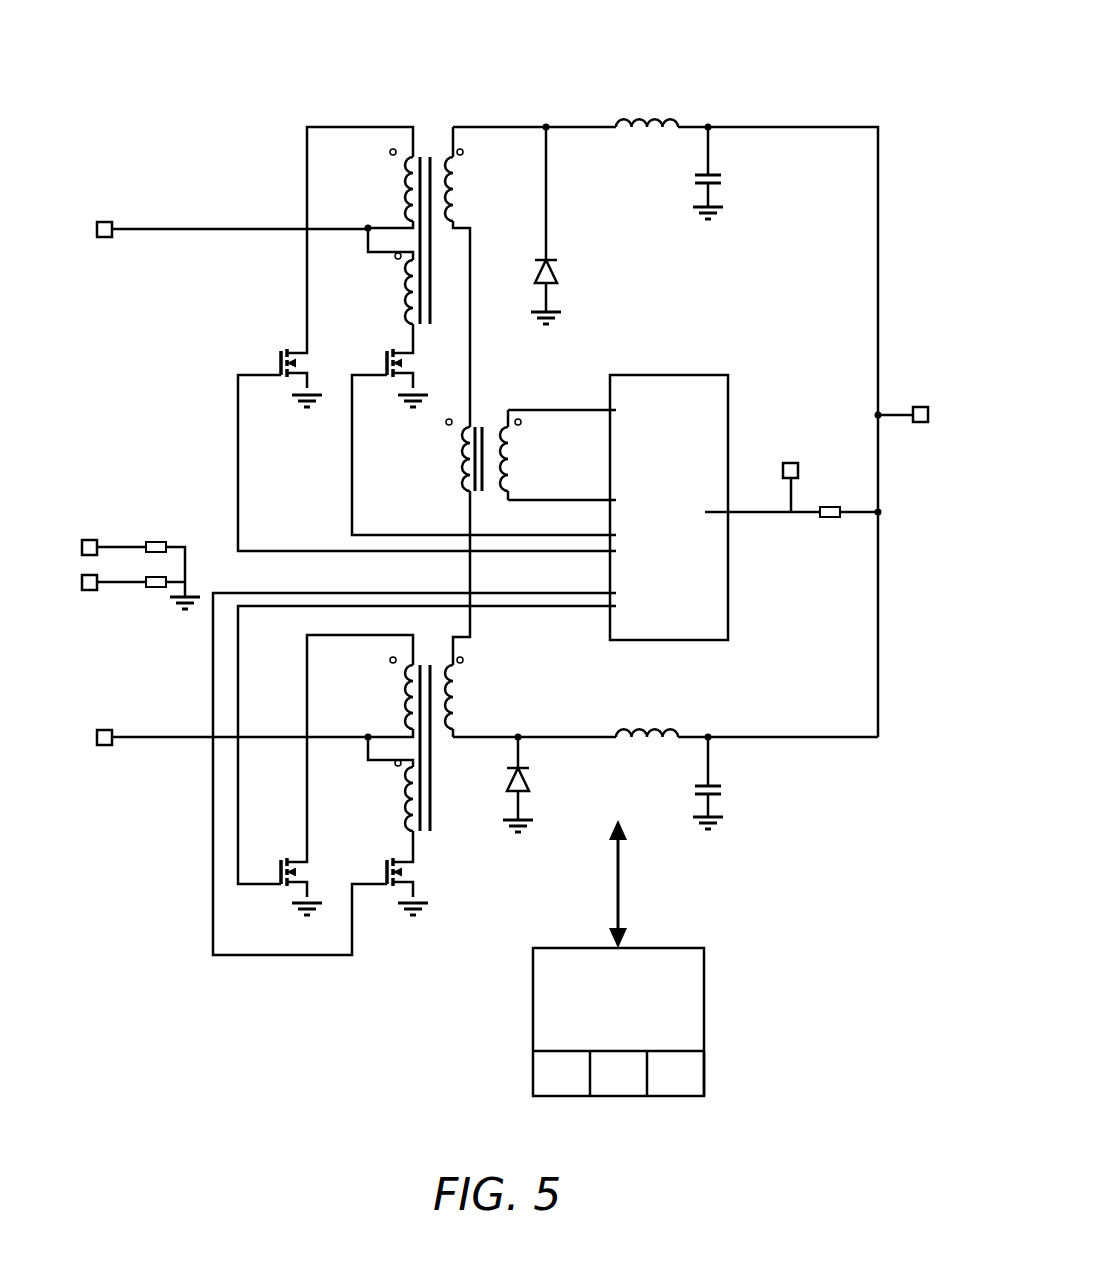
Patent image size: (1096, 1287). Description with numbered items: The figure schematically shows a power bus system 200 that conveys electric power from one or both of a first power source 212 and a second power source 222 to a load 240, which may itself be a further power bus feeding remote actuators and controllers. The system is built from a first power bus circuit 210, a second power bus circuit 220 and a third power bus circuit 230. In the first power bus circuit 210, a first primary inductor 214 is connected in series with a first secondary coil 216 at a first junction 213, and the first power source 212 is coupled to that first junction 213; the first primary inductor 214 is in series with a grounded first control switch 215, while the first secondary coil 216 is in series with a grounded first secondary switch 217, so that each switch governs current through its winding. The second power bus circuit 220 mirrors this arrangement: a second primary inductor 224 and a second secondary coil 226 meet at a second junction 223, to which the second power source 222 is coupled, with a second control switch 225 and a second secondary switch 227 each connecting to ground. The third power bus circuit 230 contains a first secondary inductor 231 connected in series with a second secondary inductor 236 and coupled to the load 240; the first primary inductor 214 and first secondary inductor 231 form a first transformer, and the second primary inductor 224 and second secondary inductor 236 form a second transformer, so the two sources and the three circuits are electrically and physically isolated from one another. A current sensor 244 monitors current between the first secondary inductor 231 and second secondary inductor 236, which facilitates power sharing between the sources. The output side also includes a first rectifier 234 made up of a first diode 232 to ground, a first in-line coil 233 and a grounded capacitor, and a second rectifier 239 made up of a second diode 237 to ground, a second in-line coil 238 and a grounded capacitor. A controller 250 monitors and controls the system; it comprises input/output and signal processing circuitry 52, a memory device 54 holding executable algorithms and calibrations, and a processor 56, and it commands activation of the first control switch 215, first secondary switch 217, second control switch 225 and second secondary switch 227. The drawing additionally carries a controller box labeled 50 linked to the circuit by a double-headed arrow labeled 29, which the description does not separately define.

The power bus system 200 is at (740, 75).
The first power bus circuit 210 is at (335, 324).
The first power source 212 is at (105, 222).
The first junction 213 is at (360, 232).
The first primary inductor 214 is at (404, 183).
The first control switch 215 is at (289, 352).
The first secondary coil 216 is at (404, 290).
The first secondary switch 217 is at (395, 362).
The second power bus circuit 220 is at (335, 774).
The second power source 222 is at (105, 730).
The second junction 223 is at (360, 735).
The second primary inductor 224 is at (404, 688).
The second control switch 225 is at (290, 884).
The second secondary coil 226 is at (404, 798).
The second secondary switch 227 is at (395, 870).
The communication link 29 is at (600, 853).
The third power bus circuit 230 is at (709, 426).
The first secondary inductor 231 is at (450, 196).
The first diode 232 is at (556, 282).
The first in-line coil 233 is at (655, 111).
The first rectifier 234 is at (762, 124).
The second secondary inductor 236 is at (450, 700).
The second diode 237 is at (523, 790).
The second in-line coil 238 is at (655, 721).
The second rectifier 239 is at (762, 734).
The load 240 is at (920, 405).
The current sensor 244 is at (456, 483).
The controller 250 is at (746, 507).
The controller 50 is at (618, 1022).
The input/output and signal processing circuitry 52 is at (568, 1073).
The memory device 54 is at (625, 1073).
The processor 56 is at (682, 1073).